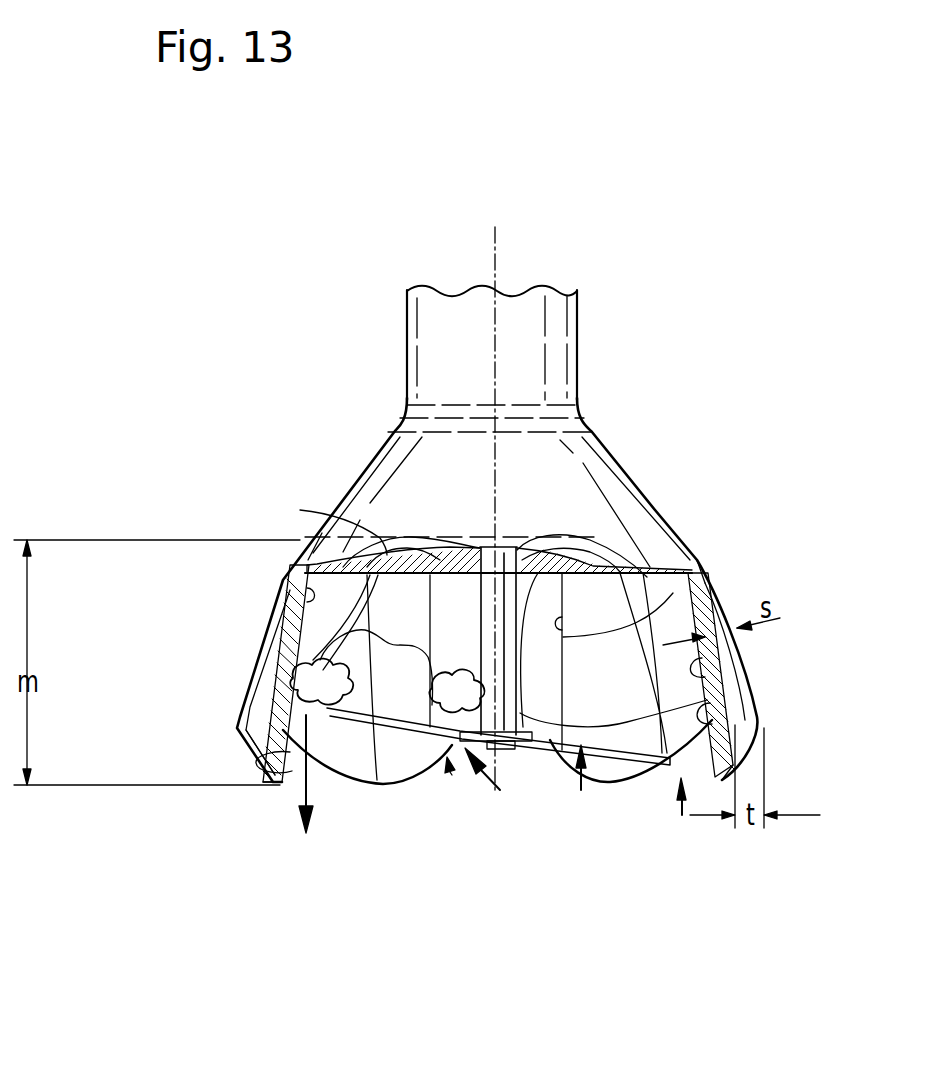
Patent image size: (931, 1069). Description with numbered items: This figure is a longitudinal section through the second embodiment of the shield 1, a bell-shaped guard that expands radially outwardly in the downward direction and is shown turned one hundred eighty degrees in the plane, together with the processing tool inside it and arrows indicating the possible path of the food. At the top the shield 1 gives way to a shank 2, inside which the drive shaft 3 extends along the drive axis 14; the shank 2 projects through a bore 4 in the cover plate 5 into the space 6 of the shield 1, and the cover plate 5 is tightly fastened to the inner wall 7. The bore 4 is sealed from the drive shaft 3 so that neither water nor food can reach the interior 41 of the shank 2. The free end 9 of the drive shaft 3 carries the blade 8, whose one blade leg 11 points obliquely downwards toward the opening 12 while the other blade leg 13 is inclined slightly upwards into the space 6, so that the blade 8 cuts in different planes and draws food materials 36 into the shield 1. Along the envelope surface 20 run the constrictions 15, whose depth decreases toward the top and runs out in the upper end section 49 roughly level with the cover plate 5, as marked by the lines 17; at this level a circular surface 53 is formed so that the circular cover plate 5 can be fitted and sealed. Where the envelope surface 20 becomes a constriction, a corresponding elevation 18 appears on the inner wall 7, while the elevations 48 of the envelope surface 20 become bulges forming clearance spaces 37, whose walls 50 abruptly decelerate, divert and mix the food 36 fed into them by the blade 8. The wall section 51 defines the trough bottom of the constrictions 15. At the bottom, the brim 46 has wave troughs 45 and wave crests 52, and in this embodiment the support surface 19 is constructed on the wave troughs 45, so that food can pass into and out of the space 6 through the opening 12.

The shield 1 is at (684, 473).
The shank 2 is at (410, 326).
The drive shaft 3 is at (508, 545).
The bore 4 is at (560, 533).
The cover plate 5 is at (463, 547).
The space 6 is at (682, 815).
The inner wall 7 is at (285, 598).
The blade 8 is at (583, 790).
The free end 9 is at (500, 790).
The blade leg 11 is at (623, 707).
The opening 12 is at (292, 787).
The blade leg 13 is at (360, 765).
The drive axis 14 is at (497, 258).
The constrictions 15 is at (257, 750).
The lines 17 is at (300, 510).
The elevations 18 is at (683, 693).
The support surface 19 is at (278, 787).
The envelope surface 20 is at (705, 553).
The food materials 36 is at (295, 687).
The clearance spaces 37 is at (450, 600).
The interior 41 is at (565, 483).
The wave troughs 45 is at (452, 775).
The brim 46 is at (325, 750).
The elevations 48 is at (680, 582).
The upper end section 49 is at (397, 527).
The walls 50 is at (280, 660).
The wall section 51 is at (287, 625).
The wave crests 52 is at (380, 760).
The circular surface 53 is at (295, 570).